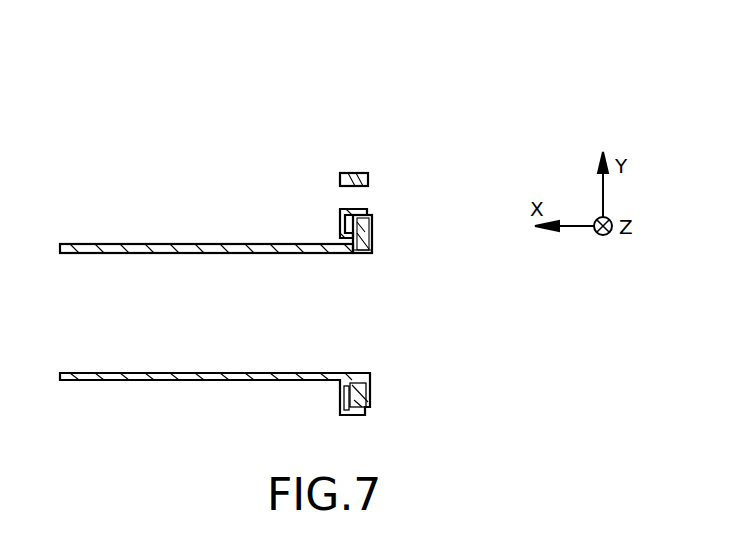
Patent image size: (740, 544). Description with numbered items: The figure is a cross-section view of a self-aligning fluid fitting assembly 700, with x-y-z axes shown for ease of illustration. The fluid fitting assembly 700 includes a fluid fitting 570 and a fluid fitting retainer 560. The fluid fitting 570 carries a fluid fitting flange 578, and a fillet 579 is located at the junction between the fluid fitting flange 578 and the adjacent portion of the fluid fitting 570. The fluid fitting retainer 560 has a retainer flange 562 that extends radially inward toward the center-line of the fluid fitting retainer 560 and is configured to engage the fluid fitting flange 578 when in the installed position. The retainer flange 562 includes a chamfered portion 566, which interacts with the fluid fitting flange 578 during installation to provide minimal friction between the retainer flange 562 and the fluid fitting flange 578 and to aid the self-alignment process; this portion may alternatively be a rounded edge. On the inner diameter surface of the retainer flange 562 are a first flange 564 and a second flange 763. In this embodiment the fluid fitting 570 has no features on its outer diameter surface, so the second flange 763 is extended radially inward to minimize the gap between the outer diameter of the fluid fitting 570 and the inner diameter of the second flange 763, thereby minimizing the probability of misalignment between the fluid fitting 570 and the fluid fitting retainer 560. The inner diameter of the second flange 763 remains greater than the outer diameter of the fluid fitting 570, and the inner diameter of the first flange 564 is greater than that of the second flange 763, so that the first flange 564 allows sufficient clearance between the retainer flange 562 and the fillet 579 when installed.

The fluid fitting assembly 700 is at (190, 92).
The fluid fitting 570 is at (93, 244).
The fluid fitting retainer 560 is at (366, 173).
The retainer flange 562 is at (340, 210).
The second flange 763 is at (338, 238).
The chamfered portion 566 is at (367, 213).
The fluid fitting flange 578 is at (365, 232).
The fillet 579 is at (353, 253).
The first flange 564 is at (351, 394).